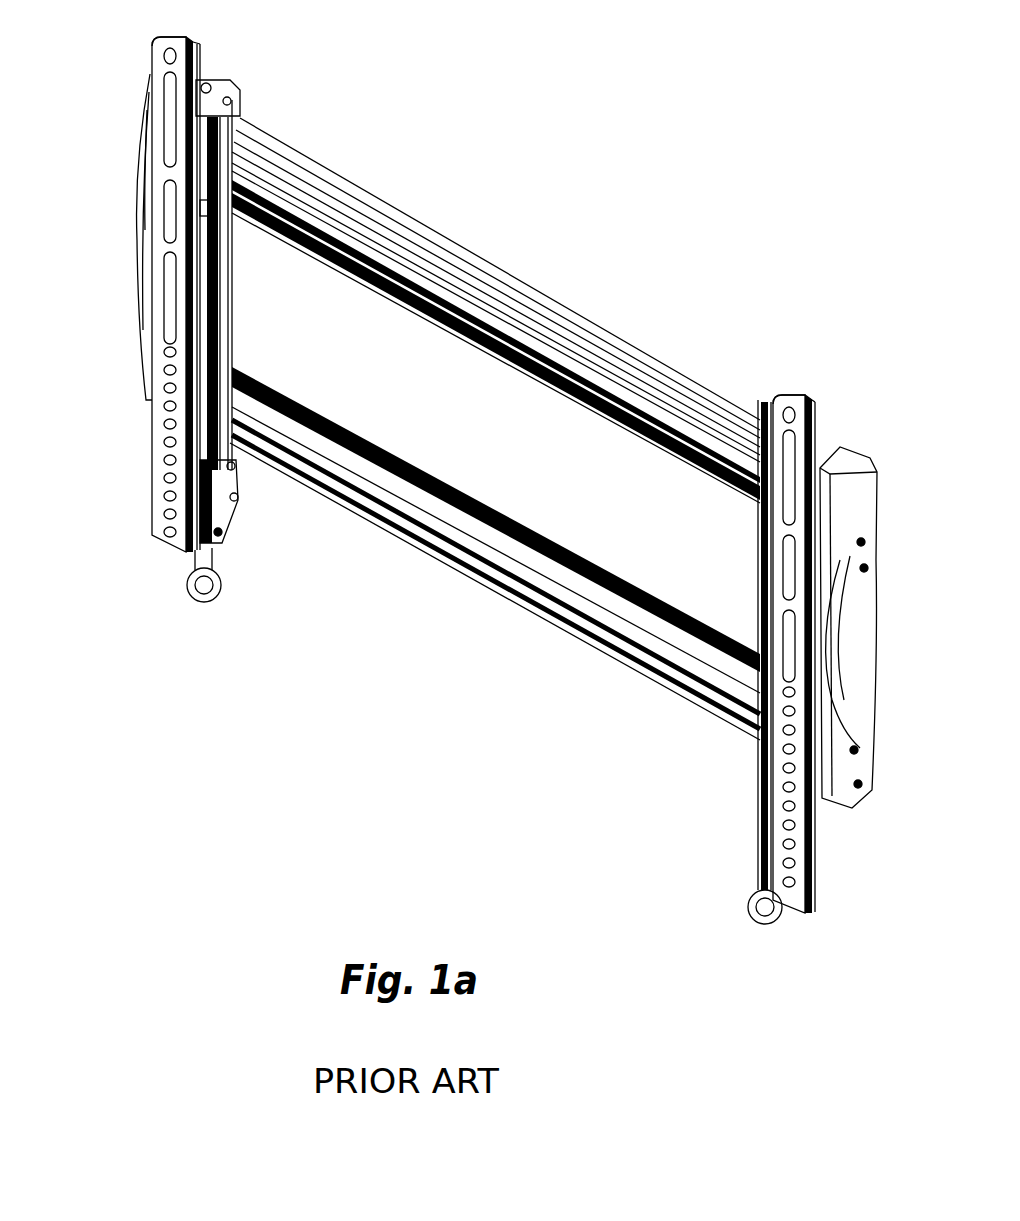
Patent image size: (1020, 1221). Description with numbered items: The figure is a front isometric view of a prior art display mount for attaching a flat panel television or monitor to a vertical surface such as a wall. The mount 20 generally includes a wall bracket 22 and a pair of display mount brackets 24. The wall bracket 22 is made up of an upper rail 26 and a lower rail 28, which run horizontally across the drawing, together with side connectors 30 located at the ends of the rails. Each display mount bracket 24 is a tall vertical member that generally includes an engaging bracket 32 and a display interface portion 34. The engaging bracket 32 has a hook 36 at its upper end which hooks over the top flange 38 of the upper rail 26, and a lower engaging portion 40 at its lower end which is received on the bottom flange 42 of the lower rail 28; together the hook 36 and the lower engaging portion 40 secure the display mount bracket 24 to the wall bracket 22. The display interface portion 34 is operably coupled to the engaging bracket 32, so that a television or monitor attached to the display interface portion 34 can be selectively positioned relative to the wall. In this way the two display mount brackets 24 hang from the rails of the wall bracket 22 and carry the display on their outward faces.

The mount 20 is at (603, 178).
The wall bracket 22 is at (665, 377).
The display mount brackets 24 is at (162, 490).
The upper rail 26 is at (425, 250).
The lower rail 28 is at (500, 597).
The side connectors 30 is at (147, 153).
The engaging bracket 32 is at (222, 267).
The display interface portion 34 is at (188, 53).
The hook 36 is at (243, 107).
The top flange 38 is at (333, 180).
The lower engaging portion 40 is at (237, 483).
The bottom flange 42 is at (430, 550).